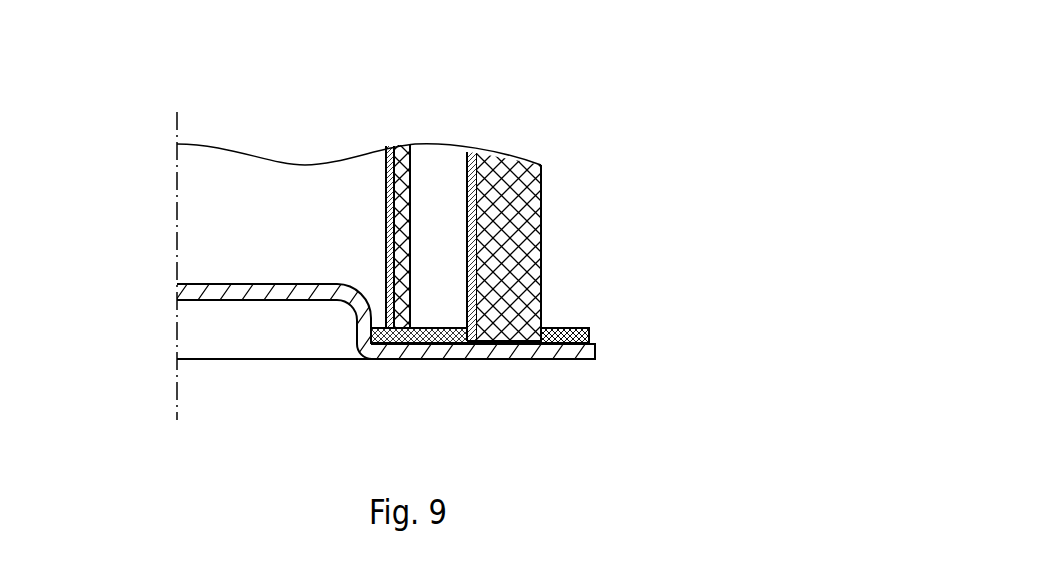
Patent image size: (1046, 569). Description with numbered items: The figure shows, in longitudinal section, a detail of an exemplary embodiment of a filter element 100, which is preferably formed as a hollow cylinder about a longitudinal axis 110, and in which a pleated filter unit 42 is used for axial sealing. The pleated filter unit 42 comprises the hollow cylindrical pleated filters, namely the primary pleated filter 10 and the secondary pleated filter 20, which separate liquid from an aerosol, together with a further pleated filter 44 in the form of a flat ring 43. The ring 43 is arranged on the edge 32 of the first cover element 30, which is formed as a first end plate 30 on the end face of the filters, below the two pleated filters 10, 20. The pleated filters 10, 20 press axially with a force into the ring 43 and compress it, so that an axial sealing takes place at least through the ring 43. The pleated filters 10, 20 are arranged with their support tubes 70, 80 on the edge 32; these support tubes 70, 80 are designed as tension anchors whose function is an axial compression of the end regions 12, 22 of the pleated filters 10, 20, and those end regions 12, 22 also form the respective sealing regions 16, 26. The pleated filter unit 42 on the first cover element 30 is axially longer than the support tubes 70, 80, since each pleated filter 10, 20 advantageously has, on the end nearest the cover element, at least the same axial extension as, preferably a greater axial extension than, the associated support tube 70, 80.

The filter element 100 is at (603, 168).
The longitudinal axis 110 is at (177, 203).
The primary pleated filter 10 is at (503, 185).
The end region 12 is at (503, 359).
The sealing region 16 is at (548, 308).
The secondary pleated filter 20 is at (402, 162).
The end region 22 is at (403, 344).
The sealing region 26 is at (372, 317).
The first end plate 30 is at (255, 300).
The edge 32 is at (441, 352).
The pleated filter unit 42 is at (575, 313).
The flat ring 43 is at (626, 327).
The further pleated filter 44 is at (590, 332).
The support tube 70 is at (470, 182).
The support tube 80 is at (388, 183).